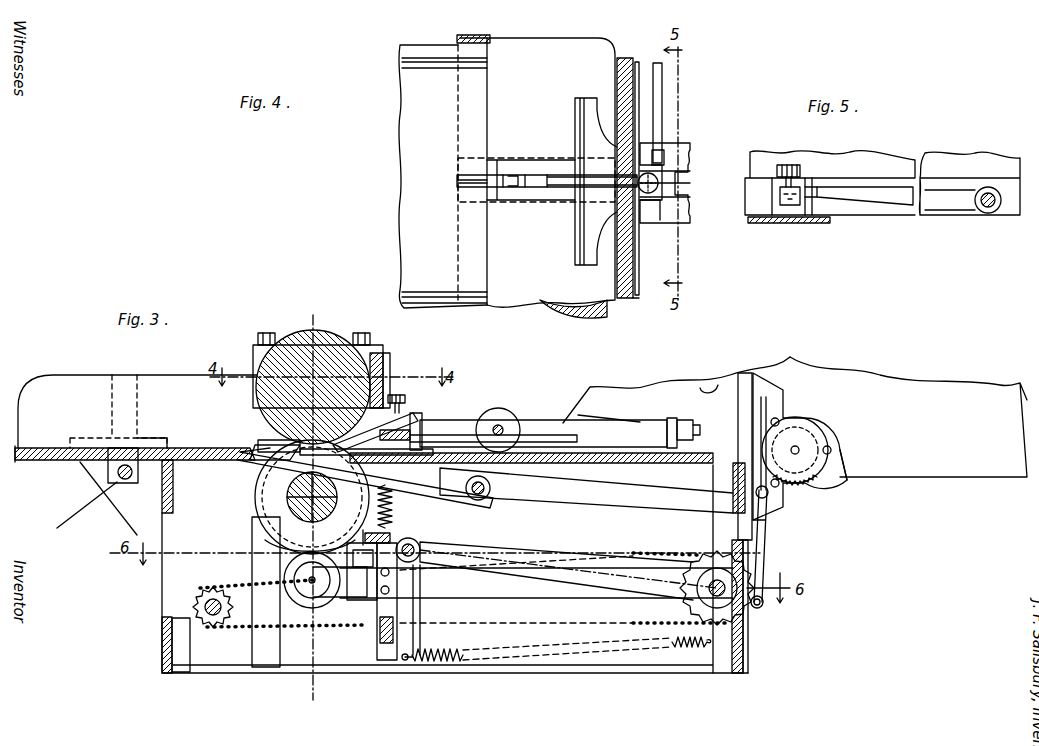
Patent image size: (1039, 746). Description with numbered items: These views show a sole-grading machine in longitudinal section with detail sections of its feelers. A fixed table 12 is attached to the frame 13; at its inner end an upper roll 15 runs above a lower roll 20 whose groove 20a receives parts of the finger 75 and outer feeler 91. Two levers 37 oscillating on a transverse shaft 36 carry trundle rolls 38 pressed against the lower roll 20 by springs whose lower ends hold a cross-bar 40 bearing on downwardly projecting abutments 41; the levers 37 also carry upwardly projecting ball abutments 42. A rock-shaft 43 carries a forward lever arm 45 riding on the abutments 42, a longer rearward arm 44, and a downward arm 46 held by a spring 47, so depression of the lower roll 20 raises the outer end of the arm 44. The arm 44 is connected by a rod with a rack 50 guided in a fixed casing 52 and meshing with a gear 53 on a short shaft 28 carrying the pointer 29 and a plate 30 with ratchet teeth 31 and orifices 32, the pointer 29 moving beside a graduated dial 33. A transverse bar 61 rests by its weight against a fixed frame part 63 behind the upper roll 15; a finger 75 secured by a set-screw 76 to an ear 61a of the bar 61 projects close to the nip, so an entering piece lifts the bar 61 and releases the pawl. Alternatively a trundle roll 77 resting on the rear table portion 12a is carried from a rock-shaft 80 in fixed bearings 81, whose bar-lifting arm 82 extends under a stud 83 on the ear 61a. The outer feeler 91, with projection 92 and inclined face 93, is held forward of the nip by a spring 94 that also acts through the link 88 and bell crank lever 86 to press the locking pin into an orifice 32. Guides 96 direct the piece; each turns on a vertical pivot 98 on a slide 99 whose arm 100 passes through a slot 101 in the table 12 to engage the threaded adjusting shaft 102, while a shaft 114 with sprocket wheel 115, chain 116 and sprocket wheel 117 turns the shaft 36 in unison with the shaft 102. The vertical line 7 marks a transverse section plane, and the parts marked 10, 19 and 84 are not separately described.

In FIG. 3, the section line 7 is at (313, 501).
In FIG. 3, the stop block 10 is at (385, 645).
In FIG. 3, the table 12 is at (137, 411).
In FIG. 3, the rear table portion 12a is at (672, 465).
In FIG. 3, the supporting frame 13 is at (162, 590).
In FIG. 3, the upper roll 15 is at (335, 345).
In FIG. 3, the lever 19 is at (768, 552).
In FIG. 4, the lower roll 20 is at (550, 312).
In FIG. 3, the lower roll 20 is at (256, 490).
In FIG. 4, the groove 20a is at (497, 158).
In FIG. 3, the groove 20a is at (262, 512).
In FIG. 3, the short shaft 28 is at (812, 468).
In FIG. 3, the pointer 29 is at (602, 409).
In FIG. 3, the plate 30 is at (850, 450).
In FIG. 3, the ratchet teeth 31 is at (815, 495).
In FIG. 3, the orifices 32 is at (838, 478).
In FIG. 3, the graduated dial 33 is at (590, 388).
In FIG. 3, the transverse rod or shaft 36 is at (712, 575).
In FIG. 3, the levers 37 is at (500, 590).
In FIG. 3, the trundle rolls 38 is at (285, 568).
In FIG. 3, the cross-bar 40 is at (460, 530).
In FIG. 3, the abutments 41 is at (377, 640).
In FIG. 3, the abutments 42 is at (330, 545).
In FIG. 3, the rock-shaft 43 is at (422, 546).
In FIG. 3, the lever arm 44 is at (540, 555).
In FIG. 3, the lever arm 45 is at (330, 510).
In FIG. 3, the arm 46 is at (412, 652).
In FIG. 3, the spring 47 is at (455, 663).
In FIG. 3, the rack 50 is at (793, 455).
In FIG. 3, the casing 52 is at (805, 430).
In FIG. 3, the gear 53 is at (832, 450).
In FIG. 4, the transverse bar 61 is at (625, 58).
In FIG. 5, the transverse bar 61 is at (1008, 178).
In FIG. 3, the transverse bar 61 is at (388, 395).
In FIG. 4, the ear 61a is at (656, 205).
In FIG. 5, the ear 61a is at (815, 180).
In FIG. 3, the ear 61a is at (410, 418).
In FIG. 4, the fixed part 63 is at (632, 298).
In FIG. 3, the fixed part 63 is at (380, 362).
In FIG. 4, the finger 75 is at (560, 176).
In FIG. 5, the finger 75 is at (782, 200).
In FIG. 3, the finger 75 is at (325, 486).
In FIG. 4, the set-screw 76 is at (660, 183).
In FIG. 5, the set-screw 76 is at (785, 165).
In FIG. 3, the set-screw 76 is at (405, 399).
In FIG. 3, the trundle roll 77 is at (500, 418).
In FIG. 5, the rock-shaft 80 is at (988, 212).
In FIG. 3, the rock-shaft 80 is at (648, 420).
In FIG. 3, the fixed bearings 81 is at (455, 433).
In FIG. 4, the bar-lifting arm 82 is at (664, 95).
In FIG. 5, the bar-lifting arm 82 is at (945, 208).
In FIG. 4, the stud 83 is at (665, 158).
In FIG. 5, the stud 83 is at (822, 190).
In FIG. 3, the hook 84 is at (725, 410).
In FIG. 3, the bell crank lever 86 is at (693, 428).
In FIG. 3, the rod or link 88 is at (815, 443).
In FIG. 3, the outer feeler 91 is at (285, 462).
In FIG. 4, the projection 92 is at (513, 188).
In FIG. 3, the projection 92 is at (265, 440).
In FIG. 4, the inclined face 93 is at (487, 190).
In FIG. 3, the inclined face 93 is at (255, 448).
In FIG. 3, the spring 94 is at (768, 530).
In FIG. 3, the guides 96 is at (140, 388).
In FIG. 3, the vertical pivot 98 is at (112, 385).
In FIG. 3, the slide 99 is at (70, 440).
In FIG. 3, the arm 100 is at (138, 478).
In FIG. 3, the transverse slot 101 is at (150, 446).
In FIG. 3, the adjusting shaft 102 is at (97, 498).
In FIG. 3, the shaft 114 is at (208, 600).
In FIG. 3, the sprocket wheel 115 is at (260, 612).
In FIG. 3, the chain 116 is at (232, 628).
In FIG. 3, the sprocket wheel 117 is at (682, 593).